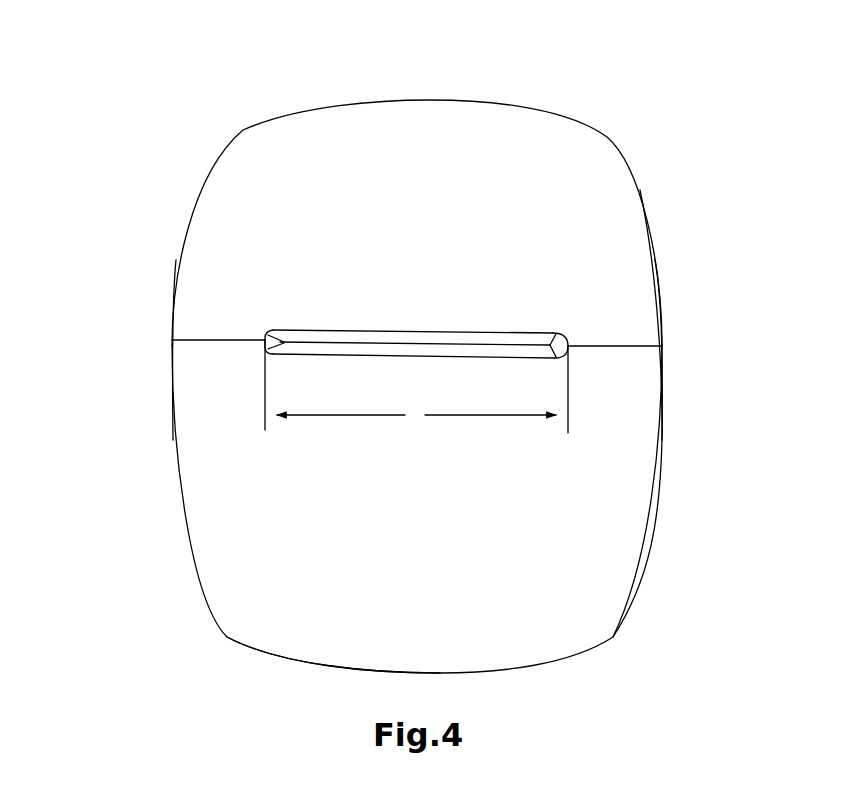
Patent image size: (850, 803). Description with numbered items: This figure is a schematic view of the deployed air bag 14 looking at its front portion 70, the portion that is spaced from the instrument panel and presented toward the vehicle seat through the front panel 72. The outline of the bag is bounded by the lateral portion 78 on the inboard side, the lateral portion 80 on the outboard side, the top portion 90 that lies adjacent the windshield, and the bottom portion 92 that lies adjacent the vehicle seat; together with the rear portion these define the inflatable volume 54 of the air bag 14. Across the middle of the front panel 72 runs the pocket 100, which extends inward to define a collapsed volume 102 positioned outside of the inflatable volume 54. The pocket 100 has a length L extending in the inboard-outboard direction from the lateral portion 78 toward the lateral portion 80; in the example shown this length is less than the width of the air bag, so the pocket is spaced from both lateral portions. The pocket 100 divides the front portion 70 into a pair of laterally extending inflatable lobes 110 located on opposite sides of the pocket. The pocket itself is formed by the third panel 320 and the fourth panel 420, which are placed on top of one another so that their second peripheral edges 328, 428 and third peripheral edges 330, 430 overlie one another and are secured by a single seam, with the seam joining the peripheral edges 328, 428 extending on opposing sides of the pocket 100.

The air bag 14 is at (428, 374).
The inflatable volume 54 is at (307, 583).
The front portion 70 is at (417, 185).
The front panel 72 is at (454, 534).
The lateral portion 78 is at (172, 377).
The lateral portion 80 is at (663, 417).
The top portion 90 is at (427, 100).
The bottom portion 92 is at (507, 667).
The pocket 100 is at (432, 248).
The collapsed volume 102 is at (490, 328).
The inflatable lobes 110 is at (613, 252).
The third panel 320 is at (292, 333).
The second peripheral edge 328 is at (428, 324).
The third peripheral edge 330 is at (368, 200).
The fourth panel 420 is at (303, 348).
The second peripheral edge 428 is at (220, 340).
The third peripheral edge 430 is at (330, 330).